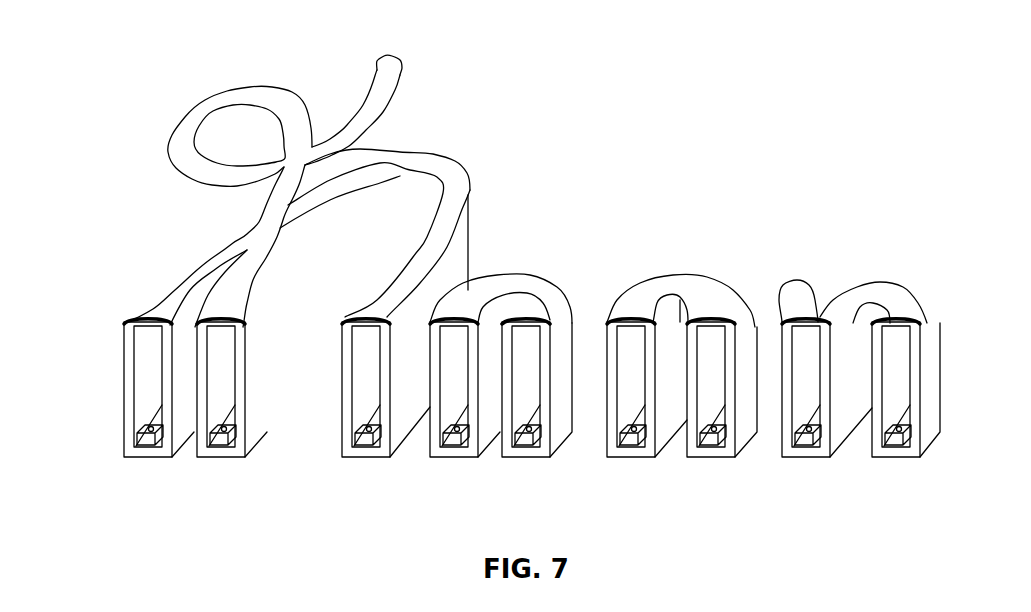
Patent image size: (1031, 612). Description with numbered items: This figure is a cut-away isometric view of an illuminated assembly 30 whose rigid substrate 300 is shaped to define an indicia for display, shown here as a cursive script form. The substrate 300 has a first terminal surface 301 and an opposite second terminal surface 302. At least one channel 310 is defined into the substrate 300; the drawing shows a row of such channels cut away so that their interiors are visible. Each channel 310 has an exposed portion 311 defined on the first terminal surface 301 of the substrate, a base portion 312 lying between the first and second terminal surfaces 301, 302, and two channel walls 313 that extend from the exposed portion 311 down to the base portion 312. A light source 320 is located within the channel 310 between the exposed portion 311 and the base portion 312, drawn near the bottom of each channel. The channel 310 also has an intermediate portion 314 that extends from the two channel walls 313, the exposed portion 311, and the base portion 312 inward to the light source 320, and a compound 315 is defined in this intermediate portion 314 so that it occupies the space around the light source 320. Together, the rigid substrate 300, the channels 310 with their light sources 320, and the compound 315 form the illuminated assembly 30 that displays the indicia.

The illuminated assembly 30 is at (697, 50).
The substrate 300 is at (925, 352).
The first terminal surface 301 is at (558, 298).
The second terminal surface 302 is at (340, 362).
The channel 310 is at (715, 302).
The exposed portion 311 is at (892, 302).
The base portion 312 is at (798, 447).
The channel walls 313 is at (130, 397).
The intermediate portion 314 is at (145, 383).
The compound 315 is at (145, 315).
The light source 320 is at (893, 423).